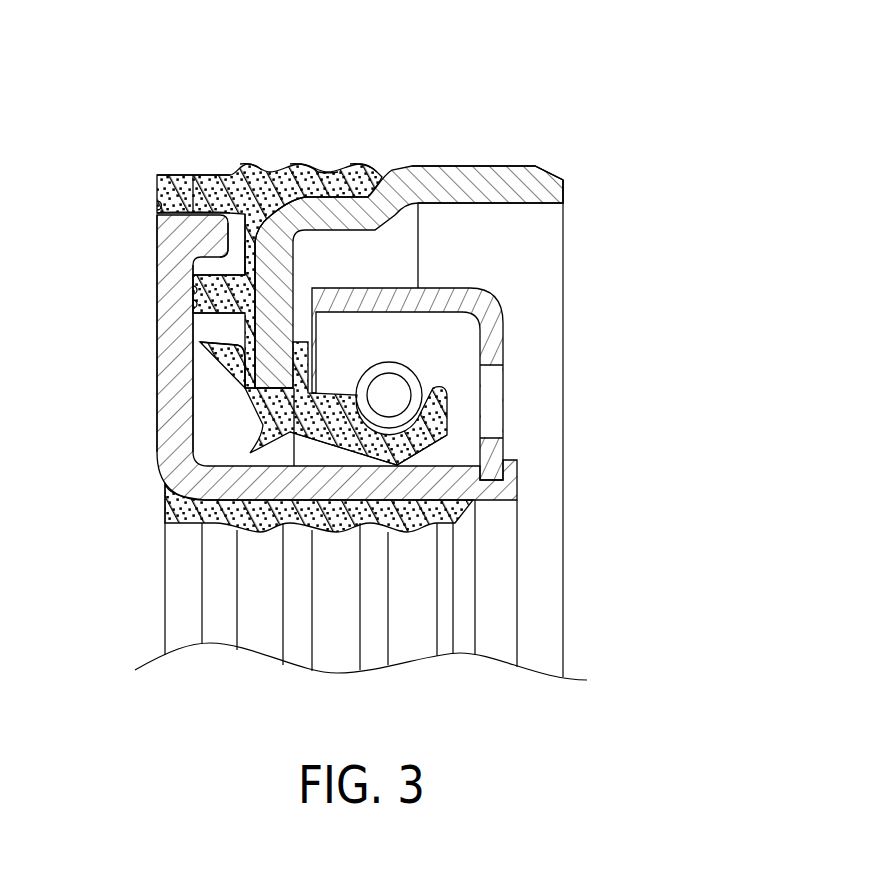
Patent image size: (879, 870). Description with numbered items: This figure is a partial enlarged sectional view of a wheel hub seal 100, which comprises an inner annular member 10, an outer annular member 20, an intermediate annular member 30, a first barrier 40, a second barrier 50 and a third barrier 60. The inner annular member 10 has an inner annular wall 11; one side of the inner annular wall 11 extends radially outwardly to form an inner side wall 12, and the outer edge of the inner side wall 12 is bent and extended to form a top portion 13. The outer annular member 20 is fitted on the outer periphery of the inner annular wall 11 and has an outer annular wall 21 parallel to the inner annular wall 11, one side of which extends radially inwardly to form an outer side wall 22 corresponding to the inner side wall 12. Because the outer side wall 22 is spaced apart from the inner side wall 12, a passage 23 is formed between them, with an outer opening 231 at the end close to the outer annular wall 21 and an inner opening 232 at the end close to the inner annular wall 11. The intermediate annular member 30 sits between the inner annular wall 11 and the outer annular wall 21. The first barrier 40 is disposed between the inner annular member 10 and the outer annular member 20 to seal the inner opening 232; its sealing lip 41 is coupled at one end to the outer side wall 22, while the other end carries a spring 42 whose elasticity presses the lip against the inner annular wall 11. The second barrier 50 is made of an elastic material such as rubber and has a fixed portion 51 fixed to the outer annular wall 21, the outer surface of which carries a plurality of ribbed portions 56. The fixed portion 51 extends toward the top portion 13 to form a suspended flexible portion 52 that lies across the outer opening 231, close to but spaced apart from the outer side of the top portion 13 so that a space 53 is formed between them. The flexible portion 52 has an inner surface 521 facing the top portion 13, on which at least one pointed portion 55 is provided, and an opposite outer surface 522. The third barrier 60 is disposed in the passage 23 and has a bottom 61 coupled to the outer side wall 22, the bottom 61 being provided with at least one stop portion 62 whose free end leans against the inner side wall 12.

The wheel hub seal 100 is at (647, 146).
The inner annular member 10 is at (150, 447).
The inner annular wall 11 is at (266, 490).
The inner side wall 12 is at (173, 422).
The top portion 13 is at (230, 216).
The outer annular member 20 is at (548, 167).
The outer annular wall 21 is at (457, 183).
The outer side wall 22 is at (203, 270).
The passage 23 is at (238, 346).
The outer opening 231 is at (243, 165).
The inner opening 232 is at (237, 472).
The intermediate annular member 30 is at (508, 321).
The first barrier 40 is at (452, 414).
The sealing lip 41 is at (412, 442).
The spring 42 is at (411, 378).
The second barrier 50 is at (170, 170).
The fixed portion 51 is at (333, 172).
The flexible portion 52 is at (157, 187).
The inner surface 521 is at (215, 278).
The outer surface 522 is at (198, 178).
The space 53 is at (252, 165).
The pointed portion 55 is at (157, 208).
The ribbed portions 56 is at (304, 168).
The third barrier 60 is at (194, 290).
The bottom 61 is at (250, 255).
The stop portion 62 is at (194, 305).